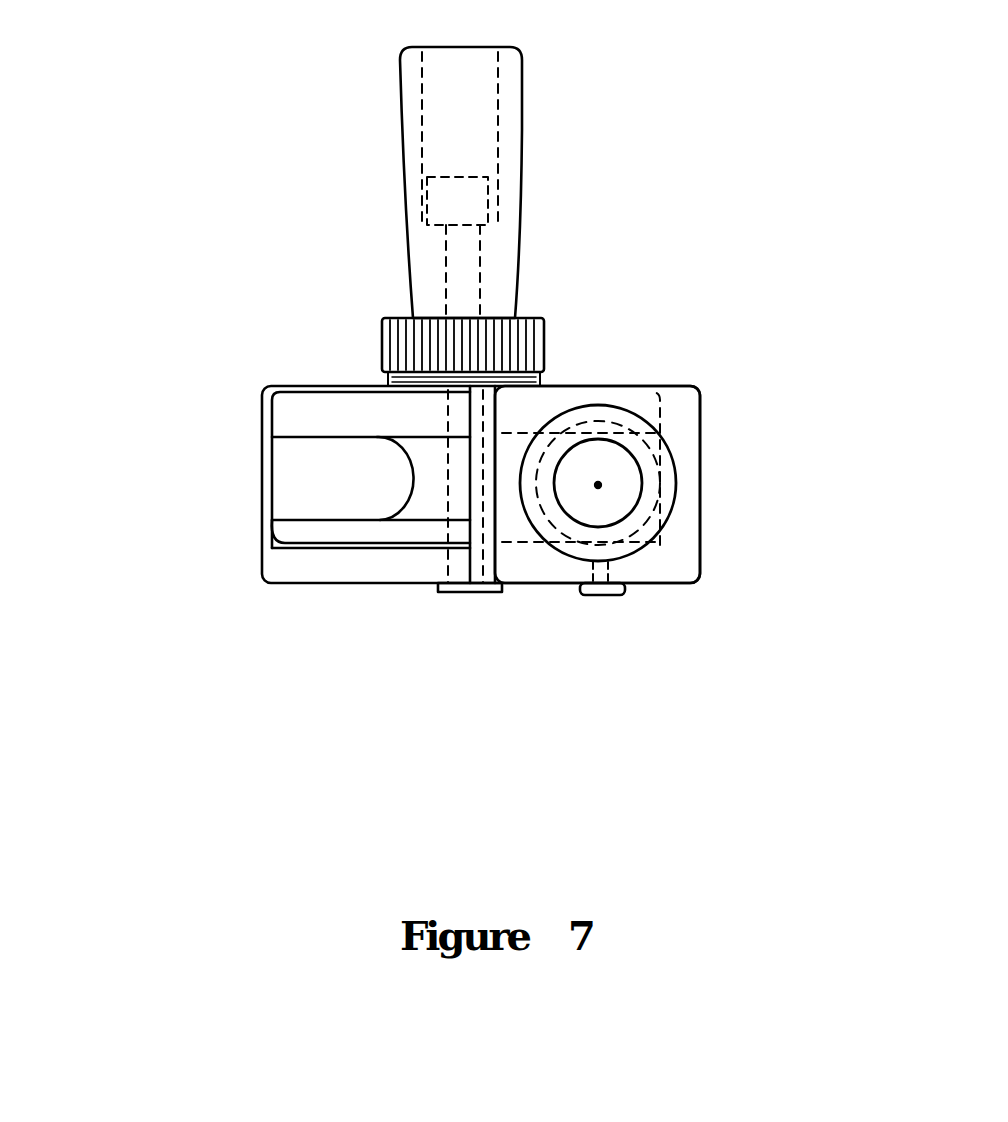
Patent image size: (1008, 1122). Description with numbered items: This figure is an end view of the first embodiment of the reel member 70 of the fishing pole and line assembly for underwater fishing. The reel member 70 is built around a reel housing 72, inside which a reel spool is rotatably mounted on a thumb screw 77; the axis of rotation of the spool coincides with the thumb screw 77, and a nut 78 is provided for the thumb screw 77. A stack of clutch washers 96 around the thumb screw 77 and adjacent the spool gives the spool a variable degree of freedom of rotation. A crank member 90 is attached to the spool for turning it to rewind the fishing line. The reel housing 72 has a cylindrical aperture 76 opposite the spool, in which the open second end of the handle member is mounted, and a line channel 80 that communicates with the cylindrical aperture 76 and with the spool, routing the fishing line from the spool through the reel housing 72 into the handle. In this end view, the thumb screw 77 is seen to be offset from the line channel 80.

The reel member 70 is at (290, 657).
The reel housing 72 is at (680, 395).
The cylindrical aperture in reel housing 76 is at (668, 488).
The thumb screw for reel spool 77 is at (533, 318).
The nut for thumb screw 78 is at (462, 594).
The line channel in reel housing 80 is at (607, 466).
The crank member of reel spool 90 is at (519, 91).
The clutch washers 96 is at (545, 378).